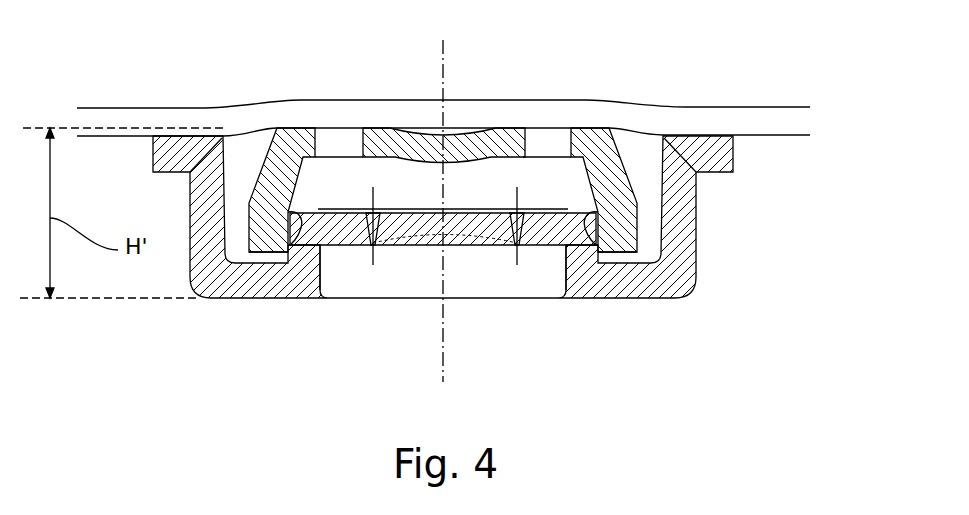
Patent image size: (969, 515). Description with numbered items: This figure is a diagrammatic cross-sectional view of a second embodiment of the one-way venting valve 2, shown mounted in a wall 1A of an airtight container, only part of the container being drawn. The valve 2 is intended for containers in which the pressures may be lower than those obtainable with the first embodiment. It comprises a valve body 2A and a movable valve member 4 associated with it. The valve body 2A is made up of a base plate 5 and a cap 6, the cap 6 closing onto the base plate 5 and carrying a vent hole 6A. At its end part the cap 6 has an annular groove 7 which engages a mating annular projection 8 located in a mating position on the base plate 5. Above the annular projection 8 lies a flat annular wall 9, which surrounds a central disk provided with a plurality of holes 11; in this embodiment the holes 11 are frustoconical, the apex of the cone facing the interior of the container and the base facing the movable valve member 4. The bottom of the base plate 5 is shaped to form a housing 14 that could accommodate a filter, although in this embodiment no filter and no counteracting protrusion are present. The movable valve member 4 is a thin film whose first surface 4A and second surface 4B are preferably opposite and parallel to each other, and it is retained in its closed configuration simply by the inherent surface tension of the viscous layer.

The wall 1A is at (103, 108).
The one-way venting valve 2 is at (486, 201).
The valve body 2A is at (686, 286).
The movable valve member 4 is at (563, 200).
The first surface 4A is at (320, 262).
The second surface 4B is at (404, 208).
The base plate 5 is at (612, 298).
The cap 6 is at (623, 156).
The vent hole 6A is at (337, 143).
The annular groove 7 is at (640, 213).
The annular projection 8 is at (290, 222).
The flat annular wall 9 is at (587, 222).
The holes 11 is at (511, 254).
The housing 14 is at (352, 280).